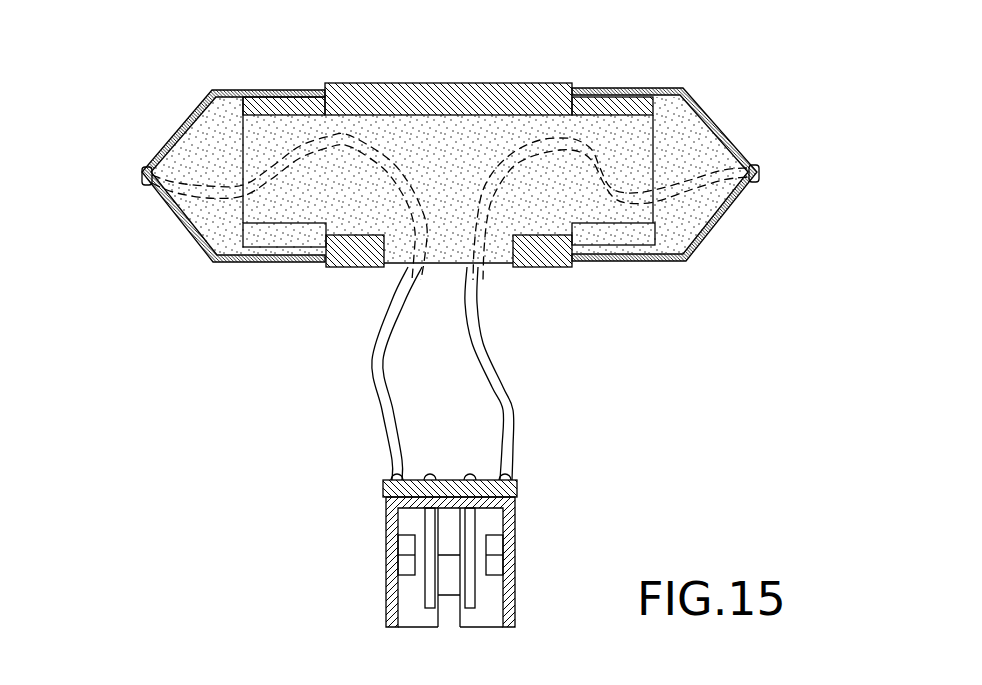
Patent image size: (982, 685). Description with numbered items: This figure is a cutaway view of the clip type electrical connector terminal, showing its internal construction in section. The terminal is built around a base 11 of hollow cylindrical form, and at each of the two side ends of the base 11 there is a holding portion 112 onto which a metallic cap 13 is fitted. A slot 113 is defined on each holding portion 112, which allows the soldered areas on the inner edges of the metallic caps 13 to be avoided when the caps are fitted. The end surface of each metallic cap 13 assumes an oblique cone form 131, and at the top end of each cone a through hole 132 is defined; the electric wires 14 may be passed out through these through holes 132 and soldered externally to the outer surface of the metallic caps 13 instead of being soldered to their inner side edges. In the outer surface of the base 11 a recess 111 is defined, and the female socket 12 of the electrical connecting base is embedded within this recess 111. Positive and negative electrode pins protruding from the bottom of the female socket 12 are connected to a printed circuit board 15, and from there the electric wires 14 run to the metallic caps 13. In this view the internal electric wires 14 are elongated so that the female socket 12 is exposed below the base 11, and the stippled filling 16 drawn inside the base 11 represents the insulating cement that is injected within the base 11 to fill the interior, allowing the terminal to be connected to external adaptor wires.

The base 11 is at (428, 92).
The recess 111 is at (483, 270).
The holding portions 112 is at (280, 100).
The slot 113 is at (267, 233).
The female socket 12 is at (386, 557).
The metallic caps 13 is at (459, 226).
The oblique cone form 131 is at (175, 222).
The through hole 132 is at (142, 176).
The electric wires 14 is at (512, 430).
The printed circuit board 15 is at (383, 483).
The filler material 16 is at (470, 152).